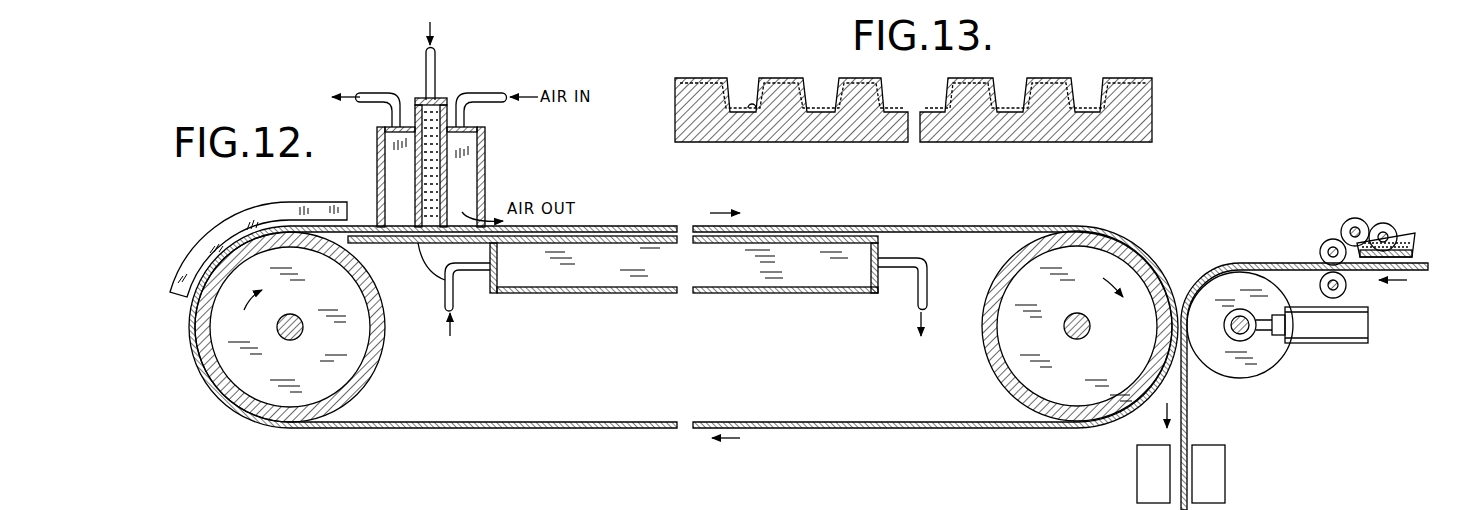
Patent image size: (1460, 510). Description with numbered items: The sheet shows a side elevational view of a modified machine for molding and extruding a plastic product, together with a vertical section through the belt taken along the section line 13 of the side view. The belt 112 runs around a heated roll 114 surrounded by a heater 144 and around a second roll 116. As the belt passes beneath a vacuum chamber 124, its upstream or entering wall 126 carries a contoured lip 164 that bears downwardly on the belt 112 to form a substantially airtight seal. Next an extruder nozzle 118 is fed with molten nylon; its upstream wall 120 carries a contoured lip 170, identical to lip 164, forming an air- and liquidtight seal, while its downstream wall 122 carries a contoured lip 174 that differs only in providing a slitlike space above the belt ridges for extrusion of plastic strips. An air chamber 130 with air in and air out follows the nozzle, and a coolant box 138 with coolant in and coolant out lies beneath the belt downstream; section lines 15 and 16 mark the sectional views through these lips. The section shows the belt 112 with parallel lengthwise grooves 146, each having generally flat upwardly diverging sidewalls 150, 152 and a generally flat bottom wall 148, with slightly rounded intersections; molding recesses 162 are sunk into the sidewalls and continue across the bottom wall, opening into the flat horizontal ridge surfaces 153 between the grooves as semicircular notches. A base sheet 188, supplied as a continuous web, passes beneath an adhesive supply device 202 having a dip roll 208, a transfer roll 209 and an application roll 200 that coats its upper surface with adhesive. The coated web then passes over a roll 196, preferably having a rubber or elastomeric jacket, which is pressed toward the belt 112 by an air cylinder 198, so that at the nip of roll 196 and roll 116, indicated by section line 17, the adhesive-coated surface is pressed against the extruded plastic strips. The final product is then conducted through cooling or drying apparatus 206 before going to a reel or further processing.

In FIG. 12, the belt 112 is at (567, 422).
In FIG. 13, the belt 112 is at (790, 128).
In FIG. 12, the heated roll 114 is at (213, 368).
In FIG. 12, the roll 116 is at (1053, 418).
In FIG. 12, the extruder nozzle 118 is at (438, 93).
In FIG. 12, the upstream wall of the extruder nozzle 120 is at (420, 155).
In FIG. 12, the downstream wall of the extruder nozzle 122 is at (478, 168).
In FIG. 12, the vacuum chamber 124 is at (377, 141).
In FIG. 12, the upstream wall of the vacuum chamber 126 is at (378, 168).
In FIG. 12, the air chamber 130 is at (485, 141).
In FIG. 12, the coolant box 138 is at (636, 293).
In FIG. 12, the heater 144 is at (193, 268).
In FIG. 13, the grooves 146 is at (741, 76).
In FIG. 13, the bottom wall 148 is at (740, 113).
In FIG. 13, the sidewall 150 is at (752, 82).
In FIG. 13, the sidewall 152 is at (733, 80).
In FIG. 13, the ridges 153 is at (848, 78).
In FIG. 13, the molding recesses 162 is at (842, 105).
In FIG. 12, the contoured lip 164 is at (363, 243).
In FIG. 12, the contoured lip 170 is at (470, 299).
In FIG. 12, the contoured lip 174 is at (487, 242).
In FIG. 12, the base sheet 188 is at (1205, 287).
In FIG. 12, the roll 196 is at (1272, 357).
In FIG. 12, the air cylinder 198 is at (1346, 325).
In FIG. 12, the application roll 200 is at (1320, 248).
In FIG. 12, the adhesive supply device 202 is at (1410, 258).
In FIG. 12, the cooling or drying apparatus 206 is at (1137, 485).
In FIG. 12, the dip roll 208 is at (1379, 251).
In FIG. 12, the transfer roll 209 is at (1347, 223).
In FIG. 12, the section line 13– 13 is at (388, 203).
In FIG. 12, the section line 15– 15 is at (423, 197).
In FIG. 12, the section line 16– 16 is at (474, 203).
In FIG. 12, the section line 17– 17 is at (1140, 300).